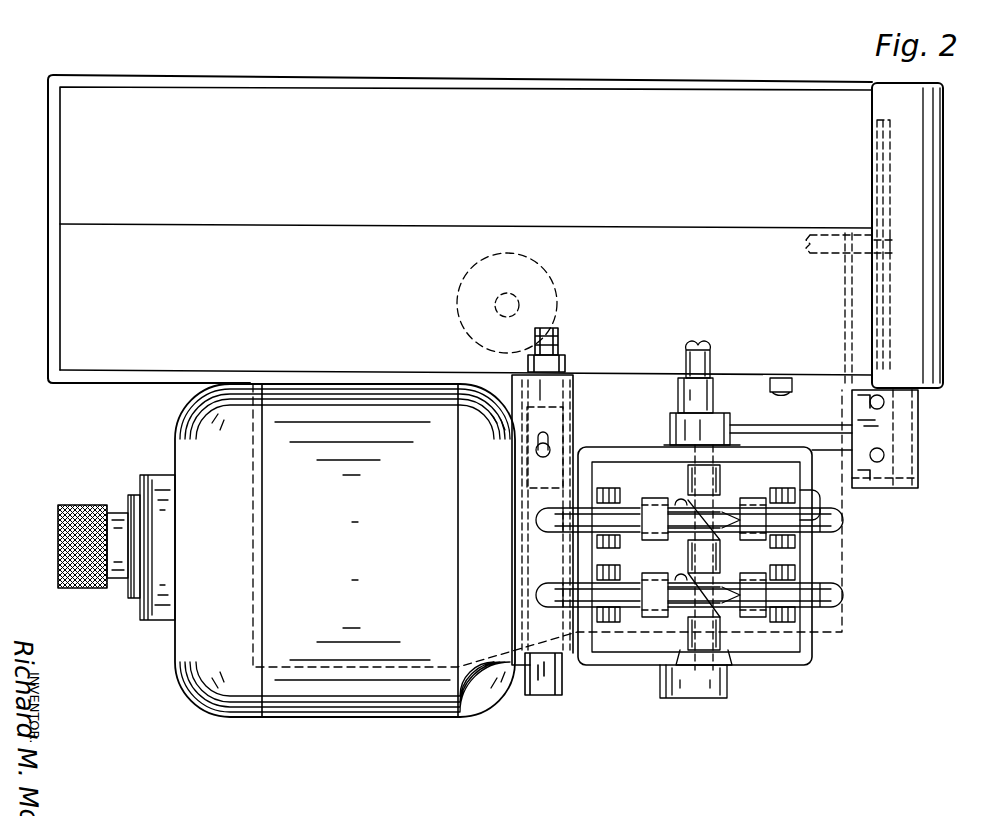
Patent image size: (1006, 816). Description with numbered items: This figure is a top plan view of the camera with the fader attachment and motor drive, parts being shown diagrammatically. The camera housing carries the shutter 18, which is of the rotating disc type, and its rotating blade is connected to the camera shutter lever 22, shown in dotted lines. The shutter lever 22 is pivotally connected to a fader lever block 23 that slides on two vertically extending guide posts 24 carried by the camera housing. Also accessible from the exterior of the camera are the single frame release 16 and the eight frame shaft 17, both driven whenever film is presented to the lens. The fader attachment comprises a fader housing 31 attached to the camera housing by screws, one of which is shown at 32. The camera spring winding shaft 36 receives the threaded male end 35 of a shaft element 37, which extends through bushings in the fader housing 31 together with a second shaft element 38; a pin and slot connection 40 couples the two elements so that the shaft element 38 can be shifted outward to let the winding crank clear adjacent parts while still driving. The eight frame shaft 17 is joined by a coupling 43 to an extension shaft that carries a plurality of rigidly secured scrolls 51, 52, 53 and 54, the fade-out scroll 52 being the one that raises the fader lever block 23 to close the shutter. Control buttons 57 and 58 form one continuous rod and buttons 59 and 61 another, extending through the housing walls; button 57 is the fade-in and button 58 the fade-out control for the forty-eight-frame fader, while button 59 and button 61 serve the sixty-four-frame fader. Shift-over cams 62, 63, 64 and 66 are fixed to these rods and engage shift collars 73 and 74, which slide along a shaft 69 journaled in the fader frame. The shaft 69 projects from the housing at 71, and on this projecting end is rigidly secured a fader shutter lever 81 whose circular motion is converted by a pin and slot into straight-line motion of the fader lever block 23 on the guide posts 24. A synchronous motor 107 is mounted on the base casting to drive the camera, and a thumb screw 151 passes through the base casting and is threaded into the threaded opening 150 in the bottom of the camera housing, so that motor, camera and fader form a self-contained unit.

The single frame release 16 is at (788, 390).
The eight frame shaft 17 is at (708, 352).
The shutter 18 is at (875, 176).
The camera shutter lever 22 is at (843, 292).
The fader lever block 23 is at (884, 420).
The guide posts 24 is at (881, 398).
The fader housing 31 is at (590, 663).
The screw 32 is at (912, 400).
The male end 35 is at (530, 361).
The spring winding shaft 36 is at (560, 338).
The shaft element 37 is at (558, 389).
The shaft element 38 is at (545, 564).
The pin and slot connection 40 is at (541, 450).
The coupling 43 is at (678, 399).
The scroll 51 is at (789, 626).
The fade-out scroll 52 is at (768, 565).
The scroll 53 is at (645, 545).
The scroll 54 is at (752, 494).
The fade-in control button 57 is at (838, 602).
The fade-out control button 58 is at (547, 598).
The fade-in control button 59 is at (830, 521).
The fade-out control button 61 is at (547, 513).
The shift-over cam 62 is at (757, 620).
The shift-over cam 63 is at (655, 618).
The shift-over cam 64 is at (768, 503).
The shift-over cam 66 is at (652, 502).
The shaft 69 is at (730, 444).
The projecting end of shaft 71 is at (690, 446).
The shift collar 73 is at (722, 596).
The shift collar 74 is at (722, 521).
The fader shutter lever 81 is at (754, 425).
The synchronous motor 107 is at (450, 550).
The threaded opening 150 is at (499, 313).
The thumb screw 151 is at (546, 272).